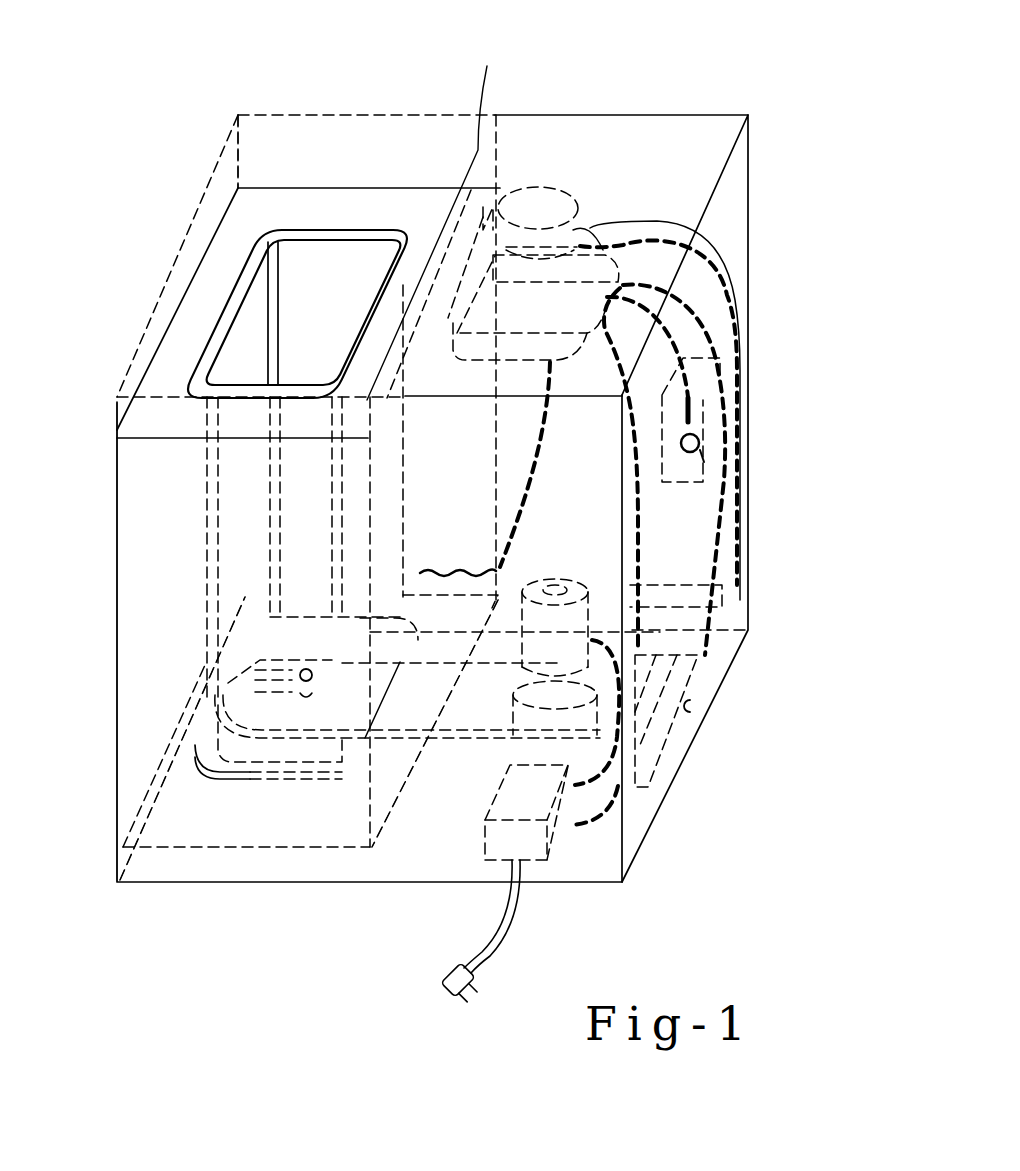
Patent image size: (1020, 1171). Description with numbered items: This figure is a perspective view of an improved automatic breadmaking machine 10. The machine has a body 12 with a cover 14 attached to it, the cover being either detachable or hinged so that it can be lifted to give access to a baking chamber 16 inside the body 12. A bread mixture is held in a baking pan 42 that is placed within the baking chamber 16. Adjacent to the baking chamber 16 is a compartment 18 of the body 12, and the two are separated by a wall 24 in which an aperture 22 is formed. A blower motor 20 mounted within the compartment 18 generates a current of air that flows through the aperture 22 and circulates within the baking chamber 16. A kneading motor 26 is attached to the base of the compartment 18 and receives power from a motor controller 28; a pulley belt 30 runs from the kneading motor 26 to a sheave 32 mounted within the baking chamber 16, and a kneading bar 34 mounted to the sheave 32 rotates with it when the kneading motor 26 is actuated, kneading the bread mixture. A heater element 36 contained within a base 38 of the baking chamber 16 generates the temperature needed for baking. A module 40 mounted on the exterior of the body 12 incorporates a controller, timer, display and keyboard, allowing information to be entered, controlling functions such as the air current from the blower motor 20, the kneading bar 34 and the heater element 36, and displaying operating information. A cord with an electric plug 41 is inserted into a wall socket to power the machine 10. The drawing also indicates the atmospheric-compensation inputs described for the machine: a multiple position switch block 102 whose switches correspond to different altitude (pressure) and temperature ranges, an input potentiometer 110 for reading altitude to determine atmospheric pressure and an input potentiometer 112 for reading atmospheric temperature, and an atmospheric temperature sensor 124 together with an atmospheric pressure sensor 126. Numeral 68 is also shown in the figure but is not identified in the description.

The automatic breadmaking machine 10 is at (95, 352).
The body 12 is at (173, 263).
The cover 14 is at (225, 148).
The baking chamber 16 is at (267, 205).
The compartment 18 is at (749, 190).
The blower motor 20 is at (537, 187).
The aperture 22 is at (436, 221).
The wall 24 is at (445, 388).
The kneading motor 26 is at (575, 622).
The motor controller 28 is at (527, 850).
The pulley belt 30 is at (453, 750).
The sheave 32 is at (218, 710).
The kneading bar 34 is at (255, 663).
The heater element 36 is at (193, 763).
The base 38 is at (132, 815).
The module 40 is at (602, 252).
The electric plug 41 is at (470, 996).
The baking pan 42 is at (313, 232).
The heater 68 is at (420, 573).
The multiple position switch block 102 is at (698, 593).
The input potentiometer 110 is at (711, 746).
The input potentiometer 112 is at (678, 728).
The atmospheric temperature sensor 124 is at (771, 430).
The atmospheric pressure sensor 126 is at (720, 428).